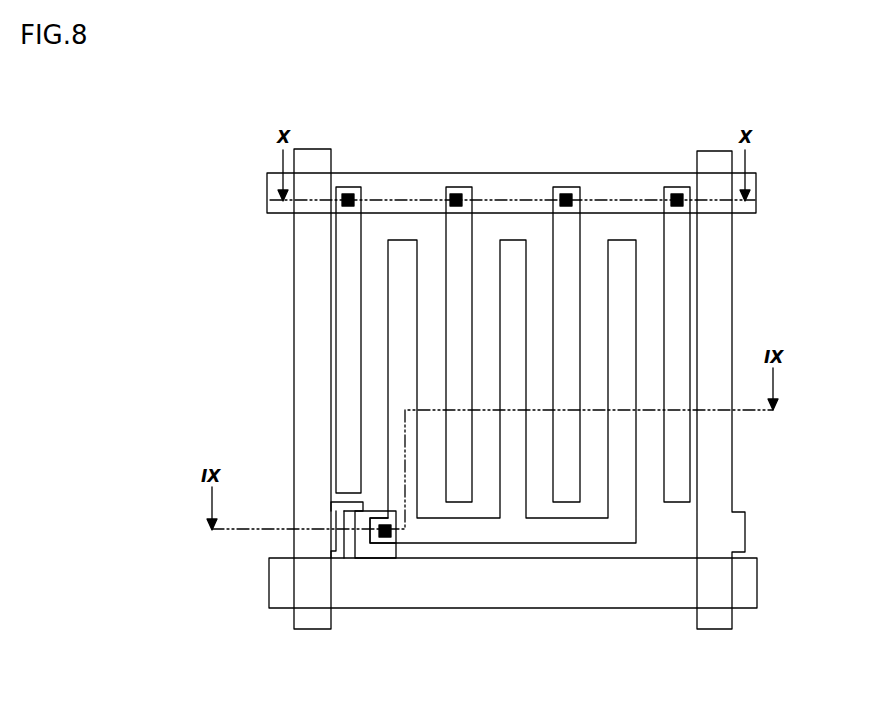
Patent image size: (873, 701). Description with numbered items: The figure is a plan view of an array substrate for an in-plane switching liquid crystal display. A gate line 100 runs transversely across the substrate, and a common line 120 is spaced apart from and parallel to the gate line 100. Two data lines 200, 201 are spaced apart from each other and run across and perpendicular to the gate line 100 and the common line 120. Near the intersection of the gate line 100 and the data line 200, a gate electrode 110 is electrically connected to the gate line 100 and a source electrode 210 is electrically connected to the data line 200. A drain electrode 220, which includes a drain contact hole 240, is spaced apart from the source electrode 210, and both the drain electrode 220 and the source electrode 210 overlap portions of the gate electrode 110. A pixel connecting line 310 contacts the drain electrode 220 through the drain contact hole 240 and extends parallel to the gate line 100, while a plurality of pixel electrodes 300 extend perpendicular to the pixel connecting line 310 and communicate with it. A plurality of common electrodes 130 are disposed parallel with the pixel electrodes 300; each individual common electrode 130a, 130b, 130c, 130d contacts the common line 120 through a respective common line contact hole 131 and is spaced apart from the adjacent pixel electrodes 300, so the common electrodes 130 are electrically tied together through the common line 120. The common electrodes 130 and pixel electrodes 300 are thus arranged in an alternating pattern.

The gate line 100 is at (558, 592).
The gate electrode 110 is at (347, 497).
The common line 120 is at (519, 192).
The common electrodes 130 is at (445, 132).
The common electrode 130a is at (353, 228).
The common electrode 130b is at (453, 222).
The common electrode 130c is at (574, 243).
The common electrode 130d is at (673, 222).
The common line contact hole 131 is at (348, 194).
The data line 200 is at (308, 378).
The data line 201 is at (714, 310).
The source electrode 210 is at (332, 522).
The drain electrode 220 is at (360, 546).
The drain contact hole 240 is at (391, 537).
The pixel electrodes 300 is at (618, 480).
The pixel connecting line 310 is at (485, 534).